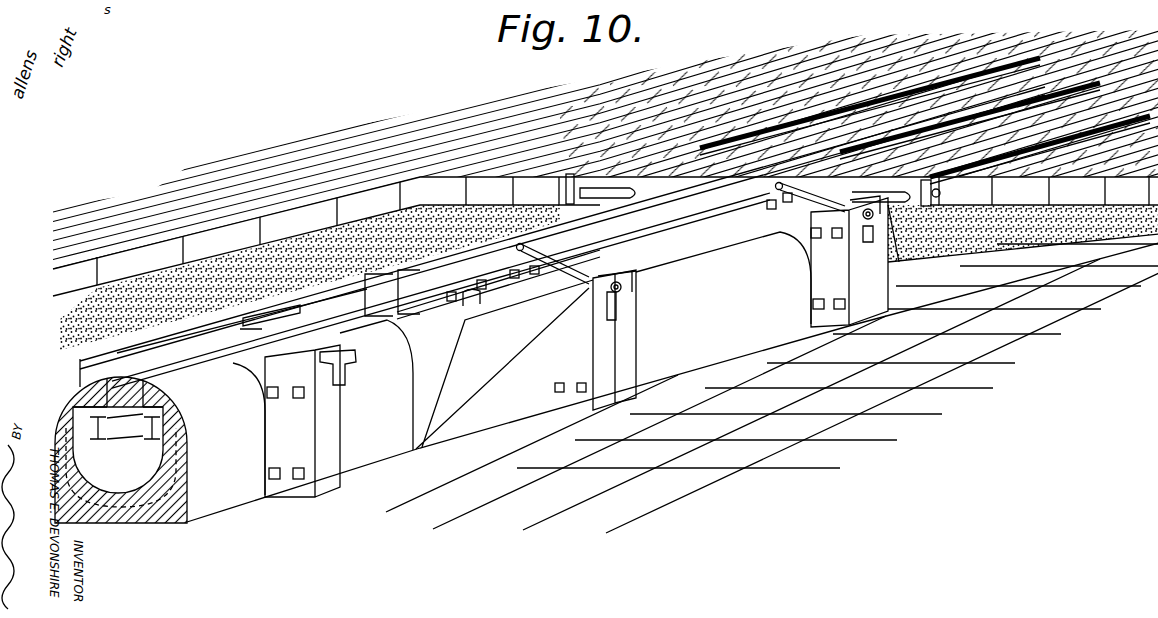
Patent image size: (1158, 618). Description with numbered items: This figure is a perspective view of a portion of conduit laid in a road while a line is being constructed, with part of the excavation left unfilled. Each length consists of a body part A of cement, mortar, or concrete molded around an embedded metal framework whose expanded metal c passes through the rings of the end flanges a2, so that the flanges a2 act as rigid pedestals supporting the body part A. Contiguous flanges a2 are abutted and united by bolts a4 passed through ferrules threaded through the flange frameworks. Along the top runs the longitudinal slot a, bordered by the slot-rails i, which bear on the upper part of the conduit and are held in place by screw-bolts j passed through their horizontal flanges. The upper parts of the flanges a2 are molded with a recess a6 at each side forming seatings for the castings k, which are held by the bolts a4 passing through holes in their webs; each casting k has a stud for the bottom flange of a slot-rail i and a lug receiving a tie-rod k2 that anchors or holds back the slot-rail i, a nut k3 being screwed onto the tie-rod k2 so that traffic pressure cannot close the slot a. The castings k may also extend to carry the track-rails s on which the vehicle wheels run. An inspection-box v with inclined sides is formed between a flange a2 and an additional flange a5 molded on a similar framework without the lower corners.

The body part of the length of conduit A is at (746, 297).
The slot a is at (312, 316).
The flange a2 is at (877, 287).
The bolt a4 is at (813, 306).
The additional flange a5 is at (278, 323).
The recess a6 is at (335, 364).
The expanded metal c is at (140, 499).
The slot-rail i is at (482, 284).
The screw-bolt j is at (488, 278).
The casting k is at (872, 212).
The tie-rod k2 is at (835, 190).
The nut k3 is at (882, 240).
The track-rail s is at (1030, 161).
The box v is at (504, 364).